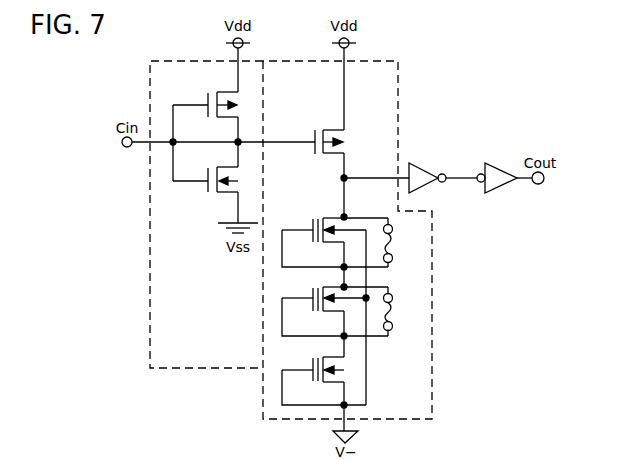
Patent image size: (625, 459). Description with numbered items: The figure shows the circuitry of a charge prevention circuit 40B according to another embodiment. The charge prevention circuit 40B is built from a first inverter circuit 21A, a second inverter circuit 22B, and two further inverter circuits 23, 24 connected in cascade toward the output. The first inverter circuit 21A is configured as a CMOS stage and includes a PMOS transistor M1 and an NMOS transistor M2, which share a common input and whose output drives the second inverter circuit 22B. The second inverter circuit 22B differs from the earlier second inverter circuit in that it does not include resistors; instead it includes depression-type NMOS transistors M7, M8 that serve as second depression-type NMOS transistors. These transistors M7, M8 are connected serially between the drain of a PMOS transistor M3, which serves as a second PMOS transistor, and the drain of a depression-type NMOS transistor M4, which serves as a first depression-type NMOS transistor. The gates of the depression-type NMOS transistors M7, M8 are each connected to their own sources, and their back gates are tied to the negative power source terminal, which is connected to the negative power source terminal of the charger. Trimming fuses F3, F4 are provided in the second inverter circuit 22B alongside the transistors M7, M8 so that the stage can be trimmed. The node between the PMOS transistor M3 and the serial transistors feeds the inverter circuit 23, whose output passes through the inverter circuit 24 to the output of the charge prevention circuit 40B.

The first inverter circuit 21A is at (184, 61).
The second inverter circuit 22B is at (309, 61).
The inverter circuit 23 is at (425, 164).
The inverter circuit 24 is at (503, 164).
The charge prevention circuit 40B is at (487, 103).
The PMOS transistor M1 is at (205, 108).
The NMOS transistor M2 is at (205, 182).
The PMOS transistor M3 is at (291, 164).
The depression-type NMOS transistor M4 is at (324, 385).
The depression-type NMOS transistor M7 is at (335, 235).
The depression-type NMOS transistor M8 is at (335, 312).
The trimming fuse F3 is at (378, 242).
The trimming fuse F4 is at (379, 311).